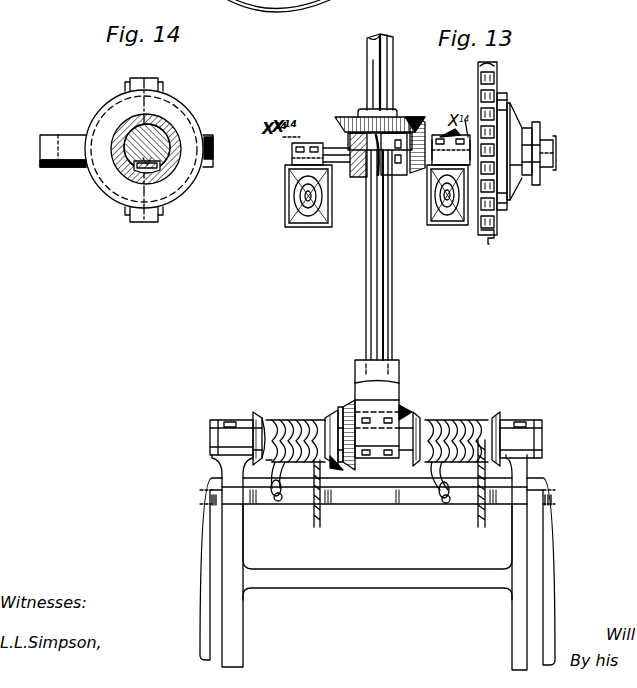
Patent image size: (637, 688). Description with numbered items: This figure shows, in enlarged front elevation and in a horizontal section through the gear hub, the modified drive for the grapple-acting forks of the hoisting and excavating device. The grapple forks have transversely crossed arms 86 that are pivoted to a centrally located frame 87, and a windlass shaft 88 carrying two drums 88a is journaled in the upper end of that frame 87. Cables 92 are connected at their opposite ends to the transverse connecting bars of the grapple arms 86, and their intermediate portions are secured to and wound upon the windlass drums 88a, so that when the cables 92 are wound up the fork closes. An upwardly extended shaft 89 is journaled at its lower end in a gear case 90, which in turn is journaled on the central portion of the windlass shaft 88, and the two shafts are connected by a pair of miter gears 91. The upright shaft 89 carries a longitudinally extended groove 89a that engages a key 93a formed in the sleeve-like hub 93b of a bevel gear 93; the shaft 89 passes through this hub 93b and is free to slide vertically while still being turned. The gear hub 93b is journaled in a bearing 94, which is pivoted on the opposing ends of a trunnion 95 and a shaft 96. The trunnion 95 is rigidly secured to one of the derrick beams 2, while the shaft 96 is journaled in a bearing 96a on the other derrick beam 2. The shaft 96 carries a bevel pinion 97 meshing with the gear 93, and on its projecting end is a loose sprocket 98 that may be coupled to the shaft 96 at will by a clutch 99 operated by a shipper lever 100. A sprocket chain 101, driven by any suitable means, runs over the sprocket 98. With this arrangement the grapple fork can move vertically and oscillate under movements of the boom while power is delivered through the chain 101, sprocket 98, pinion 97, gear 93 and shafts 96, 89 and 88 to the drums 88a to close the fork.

In FIG. 13, the horizontal beam 2 is at (300, 227).
In FIG. 13, the grapple fork arm 86 is at (200, 578).
In FIG. 13, the frame 87 is at (234, 610).
In FIG. 13, the windlass shaft 88 is at (410, 415).
In FIG. 13, the windlass drum 88a is at (256, 418).
In FIG. 14, the upwardly extended shaft 89 is at (165, 156).
In FIG. 13, the upwardly extended shaft 89 is at (368, 293).
In FIG. 14, the longitudinally extended groove 89a is at (156, 168).
In FIG. 13, the longitudinally extended groove 89a is at (382, 308).
In FIG. 13, the gear case 90 is at (399, 383).
In FIG. 13, the miter gears 91 is at (345, 407).
In FIG. 13, the cable 92 is at (278, 497).
In FIG. 13, the bevel gear 93 is at (400, 117).
In FIG. 14, the key 93a is at (138, 163).
In FIG. 14, the sleeve-like hub 93b is at (160, 122).
In FIG. 13, the sleeve-like hub 93b is at (360, 177).
In FIG. 14, the bearing 94 is at (166, 180).
In FIG. 13, the bearing 94 is at (398, 175).
In FIG. 14, the trunnion 95 is at (70, 140).
In FIG. 13, the trunnion 95 is at (340, 148).
In FIG. 14, the shaft 96 is at (206, 136).
In FIG. 13, the shaft 96 is at (556, 139).
In FIG. 13, the bearing 96a is at (452, 138).
In FIG. 13, the bevel pinion 97 is at (425, 173).
In FIG. 13, the sprocket 98 is at (488, 234).
In FIG. 13, the clutch 99 is at (505, 128).
In FIG. 13, the shipper lever 100 is at (538, 122).
In FIG. 13, the sprocket chain 101 is at (497, 218).